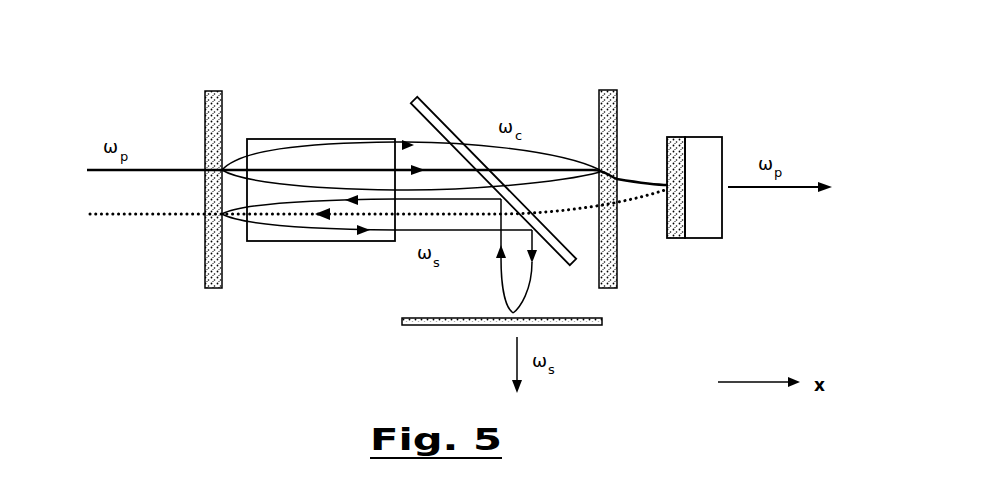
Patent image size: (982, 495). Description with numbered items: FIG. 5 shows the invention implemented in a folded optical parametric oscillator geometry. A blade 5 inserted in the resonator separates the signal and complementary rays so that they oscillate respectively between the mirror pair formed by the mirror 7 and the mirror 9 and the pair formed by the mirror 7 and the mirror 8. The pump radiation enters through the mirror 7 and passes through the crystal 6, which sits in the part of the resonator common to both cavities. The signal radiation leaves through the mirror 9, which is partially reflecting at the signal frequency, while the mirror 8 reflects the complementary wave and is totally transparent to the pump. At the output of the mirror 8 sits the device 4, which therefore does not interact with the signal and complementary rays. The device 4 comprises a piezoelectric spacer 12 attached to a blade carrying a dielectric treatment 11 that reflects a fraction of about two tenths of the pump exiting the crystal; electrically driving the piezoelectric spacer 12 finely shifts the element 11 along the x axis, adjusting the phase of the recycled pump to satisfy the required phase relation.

The device 4 is at (648, 115).
The blade 5 is at (432, 122).
The crystal 6 is at (262, 158).
The mirror 7 is at (213, 117).
The mirror 8 is at (610, 130).
The mirror 9 is at (402, 320).
The dielectric treatment 11 is at (675, 240).
The piezoelectric spacer 12 is at (705, 215).